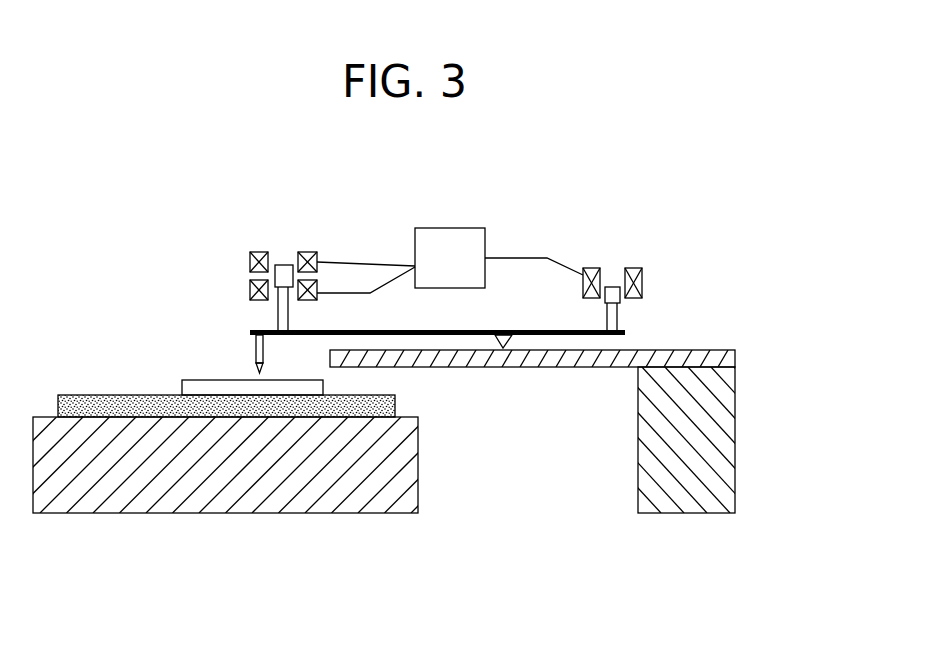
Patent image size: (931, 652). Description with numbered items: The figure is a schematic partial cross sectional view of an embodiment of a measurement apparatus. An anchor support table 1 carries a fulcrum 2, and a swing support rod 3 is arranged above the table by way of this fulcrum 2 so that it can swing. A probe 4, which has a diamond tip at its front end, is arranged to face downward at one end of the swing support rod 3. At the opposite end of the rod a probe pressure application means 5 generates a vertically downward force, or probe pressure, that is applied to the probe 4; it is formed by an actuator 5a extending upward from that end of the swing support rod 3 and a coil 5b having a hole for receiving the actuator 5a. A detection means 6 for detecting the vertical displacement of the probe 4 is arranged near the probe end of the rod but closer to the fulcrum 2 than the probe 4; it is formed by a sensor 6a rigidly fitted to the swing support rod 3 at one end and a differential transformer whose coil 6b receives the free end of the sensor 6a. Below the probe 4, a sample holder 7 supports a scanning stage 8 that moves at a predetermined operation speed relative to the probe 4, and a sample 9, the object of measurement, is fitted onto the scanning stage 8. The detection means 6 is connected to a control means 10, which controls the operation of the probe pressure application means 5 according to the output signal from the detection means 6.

The anchor support table 1 is at (735, 437).
The fulcrum 2 is at (522, 338).
The swing support rod 3 is at (402, 330).
The probe 4 is at (252, 348).
The probe pressure application means 5 is at (651, 267).
The actuator 5a is at (620, 300).
The coil 5b is at (632, 268).
The detection means 6 is at (265, 242).
The sensor 6a is at (284, 266).
The coil 6b is at (250, 290).
The sample holder 7 is at (37, 417).
The scanning stage 8 is at (127, 395).
The sample 9 is at (185, 380).
The control means 10 is at (452, 228).